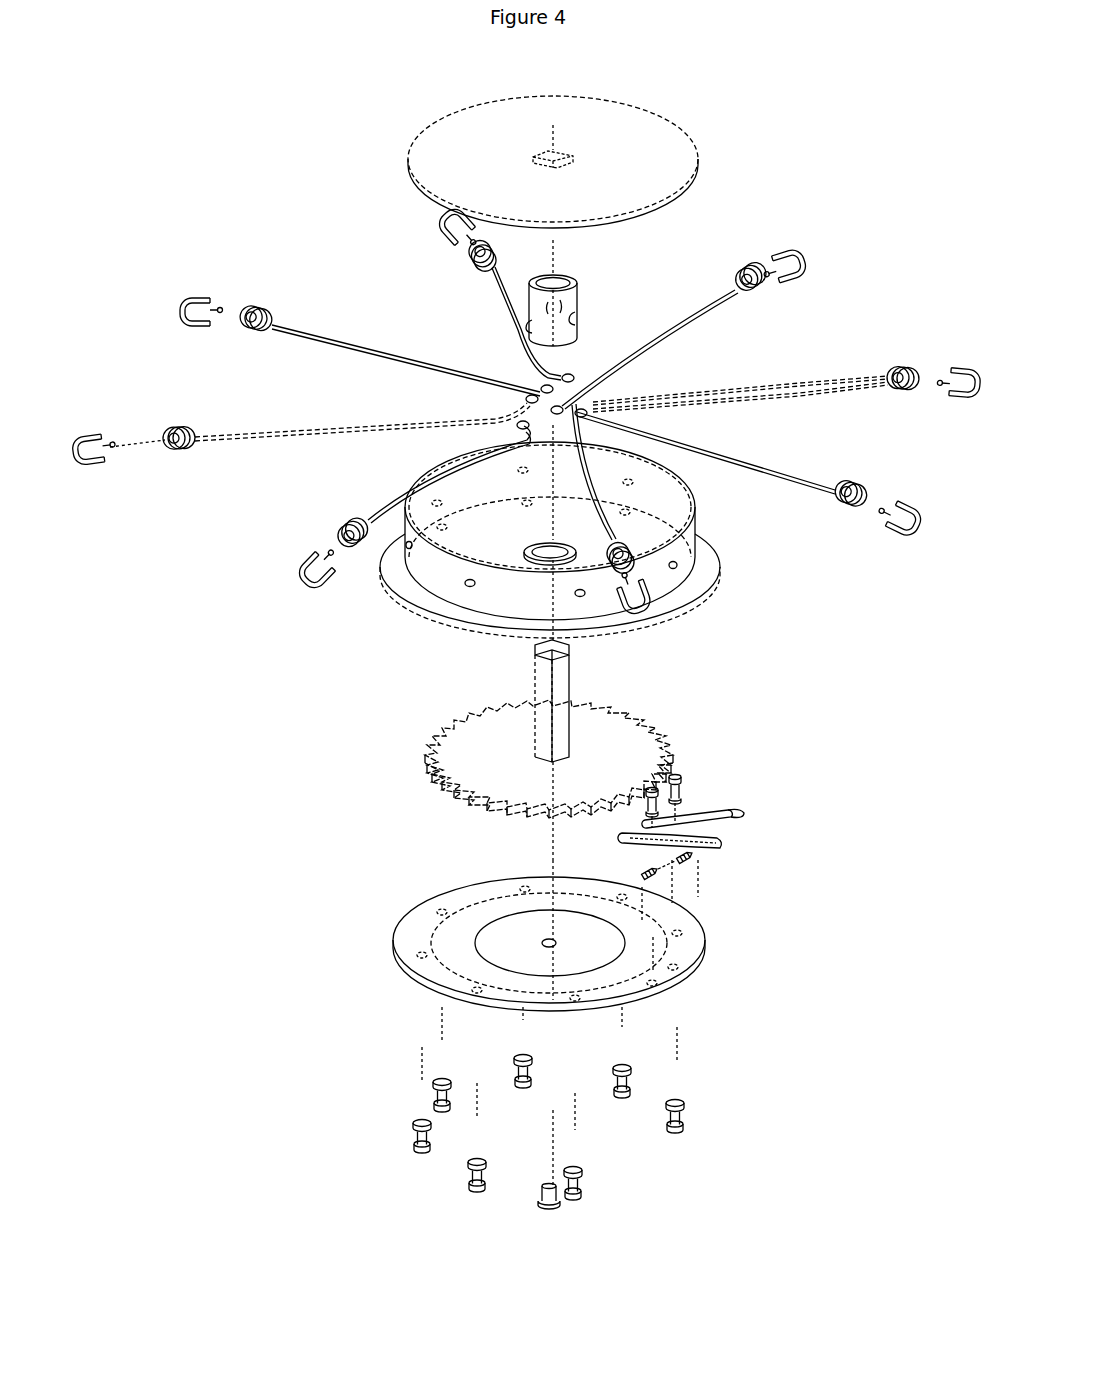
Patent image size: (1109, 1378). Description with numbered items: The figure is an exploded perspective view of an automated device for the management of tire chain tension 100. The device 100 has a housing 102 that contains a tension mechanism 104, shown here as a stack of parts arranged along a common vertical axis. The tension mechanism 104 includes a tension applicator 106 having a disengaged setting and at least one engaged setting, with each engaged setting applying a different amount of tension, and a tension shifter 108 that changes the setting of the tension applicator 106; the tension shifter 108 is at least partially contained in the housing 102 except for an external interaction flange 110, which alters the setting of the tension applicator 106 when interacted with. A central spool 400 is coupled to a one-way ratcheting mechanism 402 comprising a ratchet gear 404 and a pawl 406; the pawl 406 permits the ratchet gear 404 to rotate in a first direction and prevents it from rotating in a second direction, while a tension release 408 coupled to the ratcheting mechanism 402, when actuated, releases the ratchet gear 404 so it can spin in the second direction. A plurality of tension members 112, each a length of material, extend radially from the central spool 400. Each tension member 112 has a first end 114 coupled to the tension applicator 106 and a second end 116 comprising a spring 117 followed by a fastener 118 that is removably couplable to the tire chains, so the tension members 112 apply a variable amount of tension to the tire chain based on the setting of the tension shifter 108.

The device for the management of tire chain tension 100 is at (746, 218).
The housing 102 is at (512, 592).
The tension mechanism 104 is at (682, 646).
The tension applicator 106 is at (720, 788).
The tension shifter 108 is at (545, 727).
The interaction flange 110 is at (540, 677).
The tension members 112 is at (352, 425).
The first end 114 is at (577, 376).
The second end 116 is at (275, 323).
The spring 117 is at (903, 368).
The fastener 118 is at (225, 318).
The central spool 400 is at (545, 322).
The one-way ratcheting mechanism 402 is at (434, 806).
The ratchet gear 404 is at (535, 790).
The pawl 406 is at (705, 847).
The tension release 408 is at (737, 836).